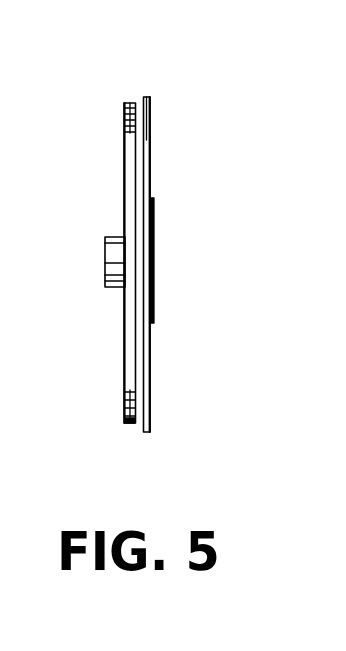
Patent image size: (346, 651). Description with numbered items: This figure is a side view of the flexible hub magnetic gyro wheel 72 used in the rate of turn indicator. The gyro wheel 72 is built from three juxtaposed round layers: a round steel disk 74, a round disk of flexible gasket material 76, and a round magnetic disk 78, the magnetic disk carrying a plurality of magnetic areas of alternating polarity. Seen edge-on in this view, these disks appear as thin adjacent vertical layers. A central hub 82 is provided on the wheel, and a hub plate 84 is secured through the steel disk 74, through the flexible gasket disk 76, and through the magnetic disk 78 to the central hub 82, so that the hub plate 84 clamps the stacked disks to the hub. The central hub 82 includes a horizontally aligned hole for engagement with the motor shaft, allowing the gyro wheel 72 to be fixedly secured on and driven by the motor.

The gyro wheel 72 is at (212, 56).
The round steel disk 74 is at (189, 250).
The round disk of flexible gasket material 76 is at (93, 237).
The round magnetic disk 78 is at (90, 258).
The central hub 82 is at (82, 245).
The hub plate 84 is at (188, 260).